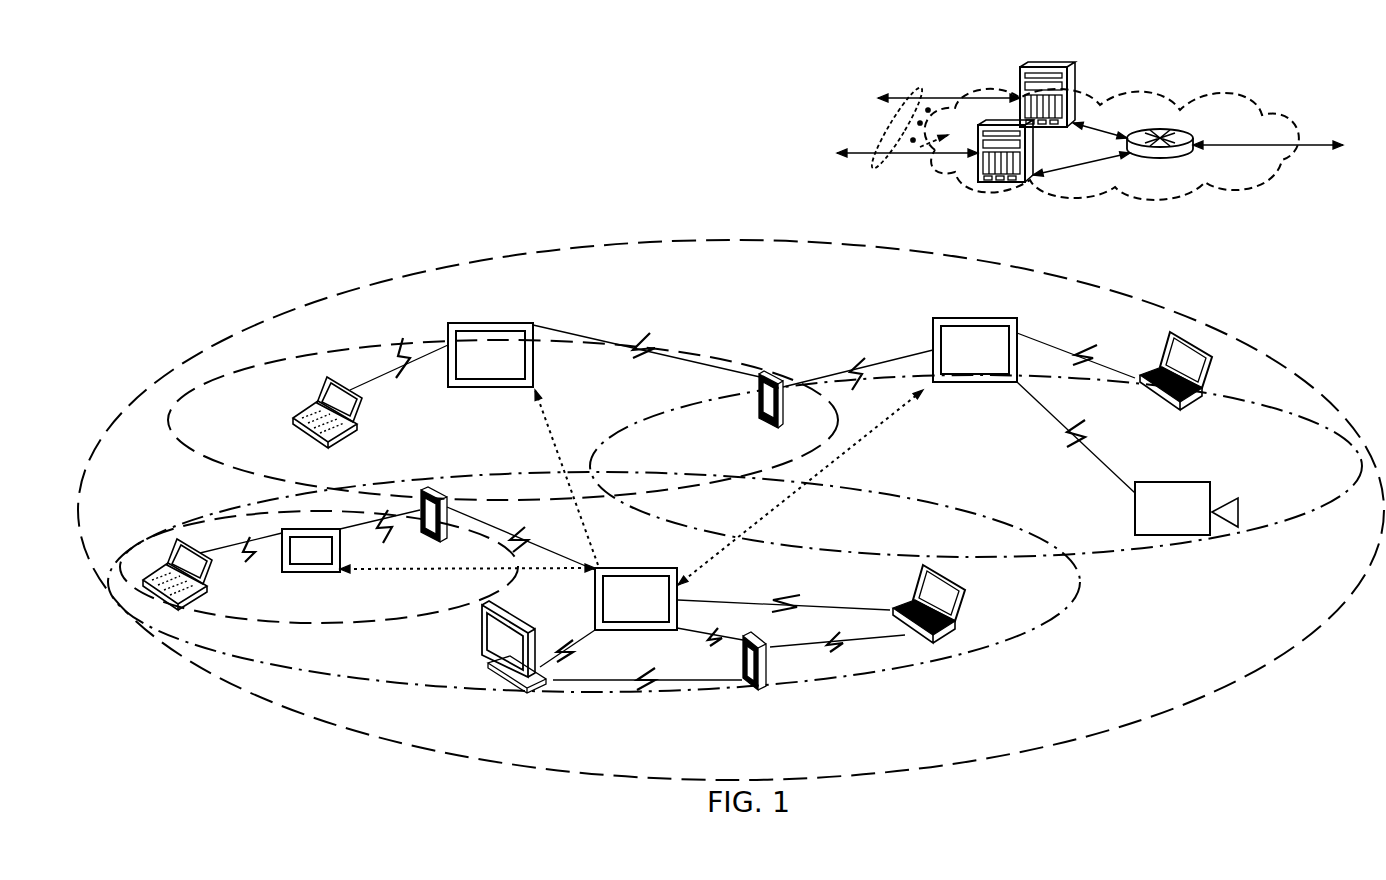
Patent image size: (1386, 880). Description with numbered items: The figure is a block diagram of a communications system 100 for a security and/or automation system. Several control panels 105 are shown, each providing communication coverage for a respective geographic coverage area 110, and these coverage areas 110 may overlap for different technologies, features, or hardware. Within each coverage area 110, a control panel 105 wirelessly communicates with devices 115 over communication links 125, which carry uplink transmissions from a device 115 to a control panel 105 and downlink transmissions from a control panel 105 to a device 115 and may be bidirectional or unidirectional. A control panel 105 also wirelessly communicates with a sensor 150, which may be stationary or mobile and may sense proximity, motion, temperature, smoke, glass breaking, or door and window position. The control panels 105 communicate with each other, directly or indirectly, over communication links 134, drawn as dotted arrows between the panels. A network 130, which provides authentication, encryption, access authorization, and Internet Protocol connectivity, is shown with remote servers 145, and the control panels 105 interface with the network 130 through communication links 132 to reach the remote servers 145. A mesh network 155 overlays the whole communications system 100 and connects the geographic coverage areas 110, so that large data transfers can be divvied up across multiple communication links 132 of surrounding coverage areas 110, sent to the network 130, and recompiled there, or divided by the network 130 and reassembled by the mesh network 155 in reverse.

The communications system 100 is at (1242, 732).
The control panel 105 is at (517, 323).
The geographic coverage area 110 is at (220, 462).
The device 115 is at (357, 422).
The communication link 125 is at (403, 338).
The network 130 is at (1193, 195).
The communication link 132 is at (893, 168).
The communication link 134 is at (838, 466).
The remote server 145 is at (1045, 62).
The sensor 150 is at (1133, 497).
The mesh network 155 is at (1188, 705).